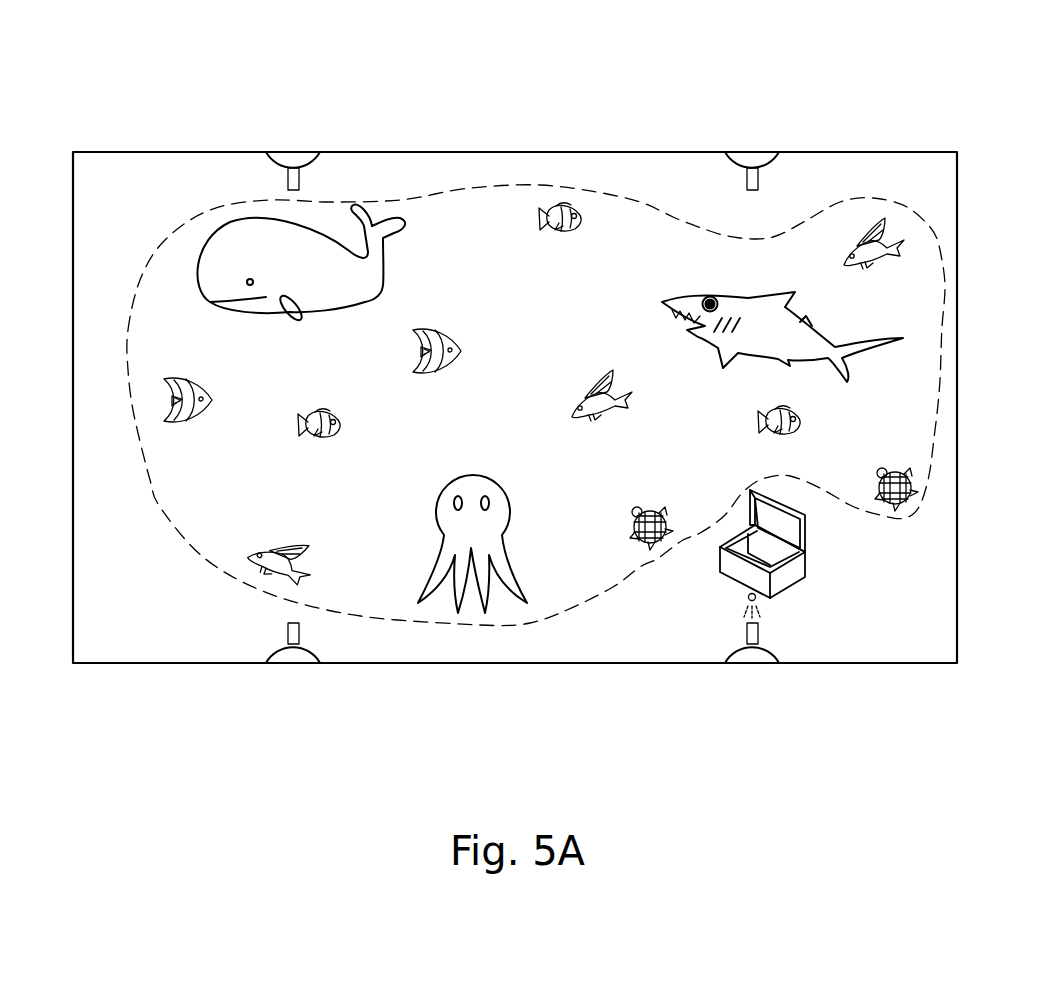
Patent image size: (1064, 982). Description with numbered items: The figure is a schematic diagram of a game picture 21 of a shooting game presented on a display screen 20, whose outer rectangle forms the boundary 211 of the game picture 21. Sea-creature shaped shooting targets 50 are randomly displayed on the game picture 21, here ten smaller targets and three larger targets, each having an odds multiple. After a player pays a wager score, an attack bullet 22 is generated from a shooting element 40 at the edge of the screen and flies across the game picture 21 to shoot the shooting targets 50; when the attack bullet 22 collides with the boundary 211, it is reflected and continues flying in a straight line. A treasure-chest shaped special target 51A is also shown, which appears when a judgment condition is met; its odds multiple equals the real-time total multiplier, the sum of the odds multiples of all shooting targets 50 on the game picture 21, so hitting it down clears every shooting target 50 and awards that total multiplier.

The display screen 20 is at (568, 405).
The game picture 21 is at (938, 187).
The boundary 211 is at (958, 540).
The attack bullet 22 is at (750, 602).
The shooting element 40 is at (752, 657).
The shooting target 50 is at (433, 594).
The special target 51A is at (793, 578).